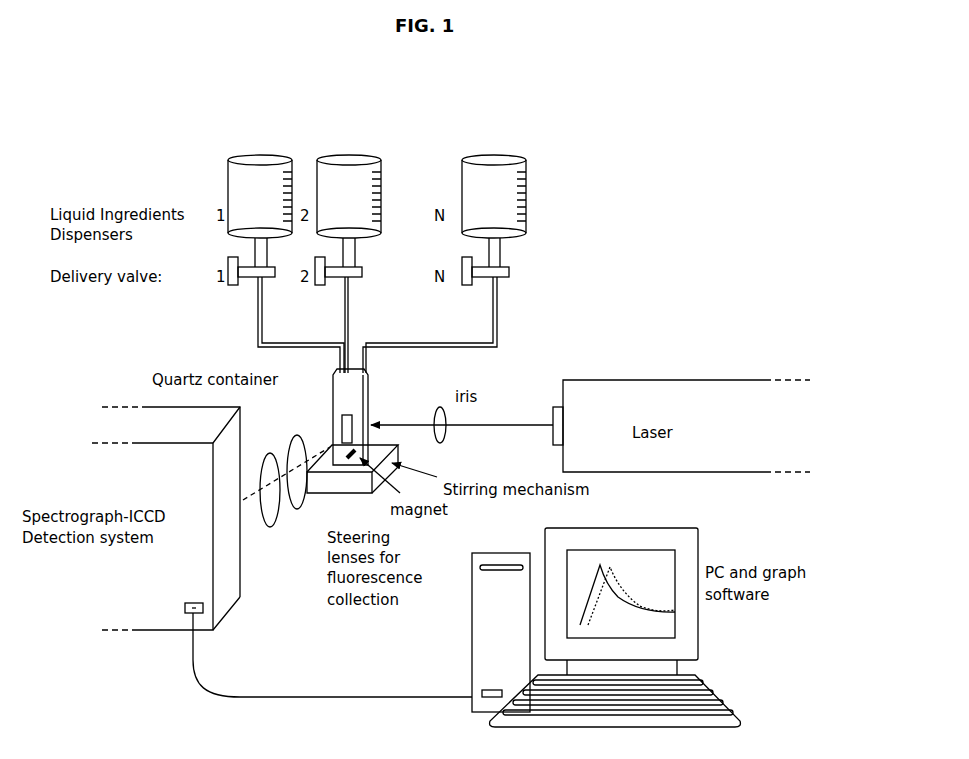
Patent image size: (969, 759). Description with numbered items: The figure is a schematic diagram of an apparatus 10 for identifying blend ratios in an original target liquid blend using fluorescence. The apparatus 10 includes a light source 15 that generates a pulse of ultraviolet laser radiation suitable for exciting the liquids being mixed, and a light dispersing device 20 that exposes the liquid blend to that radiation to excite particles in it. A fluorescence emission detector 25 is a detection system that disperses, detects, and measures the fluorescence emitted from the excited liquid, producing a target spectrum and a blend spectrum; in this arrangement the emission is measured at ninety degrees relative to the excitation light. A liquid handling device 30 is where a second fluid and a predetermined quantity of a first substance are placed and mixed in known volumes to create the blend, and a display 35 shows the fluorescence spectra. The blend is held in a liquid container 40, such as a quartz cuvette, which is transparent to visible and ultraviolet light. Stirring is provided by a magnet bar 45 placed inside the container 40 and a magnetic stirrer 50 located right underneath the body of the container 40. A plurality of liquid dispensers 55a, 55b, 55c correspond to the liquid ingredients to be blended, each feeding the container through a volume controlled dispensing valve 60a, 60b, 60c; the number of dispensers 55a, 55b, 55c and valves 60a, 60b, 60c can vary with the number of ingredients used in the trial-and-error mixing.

The apparatus 10 is at (676, 290).
The light source 15 is at (698, 372).
The light dispersing device 20 is at (733, 442).
The fluorescence emission detector 25 is at (282, 552).
The liquid handling device 30 is at (380, 413).
The display 35 is at (715, 550).
The liquid container 40 is at (320, 415).
The magnet bar 45 is at (298, 521).
The magnetic stirrer 50 is at (606, 617).
The liquid dispenser 55a is at (245, 152).
The liquid dispenser 55b is at (363, 150).
The liquid dispenser 55c is at (507, 153).
The volume controlled dispensing valve 60a is at (220, 292).
The volume controlled dispensing valve 60b is at (327, 290).
The volume controlled dispensing valve 60c is at (468, 285).